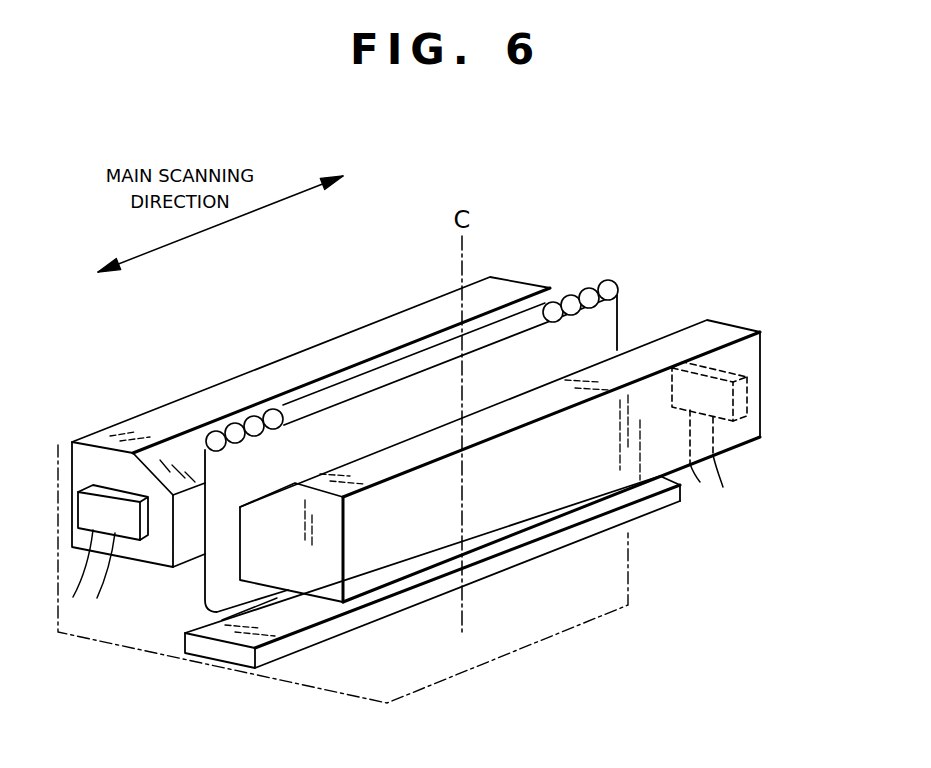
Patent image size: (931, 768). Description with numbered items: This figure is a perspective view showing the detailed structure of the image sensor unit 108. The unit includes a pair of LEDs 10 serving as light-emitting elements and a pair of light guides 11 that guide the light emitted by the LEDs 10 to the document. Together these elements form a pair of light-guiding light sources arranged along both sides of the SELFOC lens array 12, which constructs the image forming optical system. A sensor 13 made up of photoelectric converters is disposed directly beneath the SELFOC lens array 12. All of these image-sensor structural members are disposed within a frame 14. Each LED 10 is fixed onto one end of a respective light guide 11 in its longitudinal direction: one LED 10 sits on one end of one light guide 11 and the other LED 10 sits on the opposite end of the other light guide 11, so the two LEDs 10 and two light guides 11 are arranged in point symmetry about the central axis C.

The LED 10 is at (58, 445).
The light guide 11 is at (216, 398).
The SELFOC lens array 12 is at (528, 316).
The sensor 13 is at (217, 655).
The frame 14 is at (517, 653).
The image sensor unit 108 is at (431, 427).